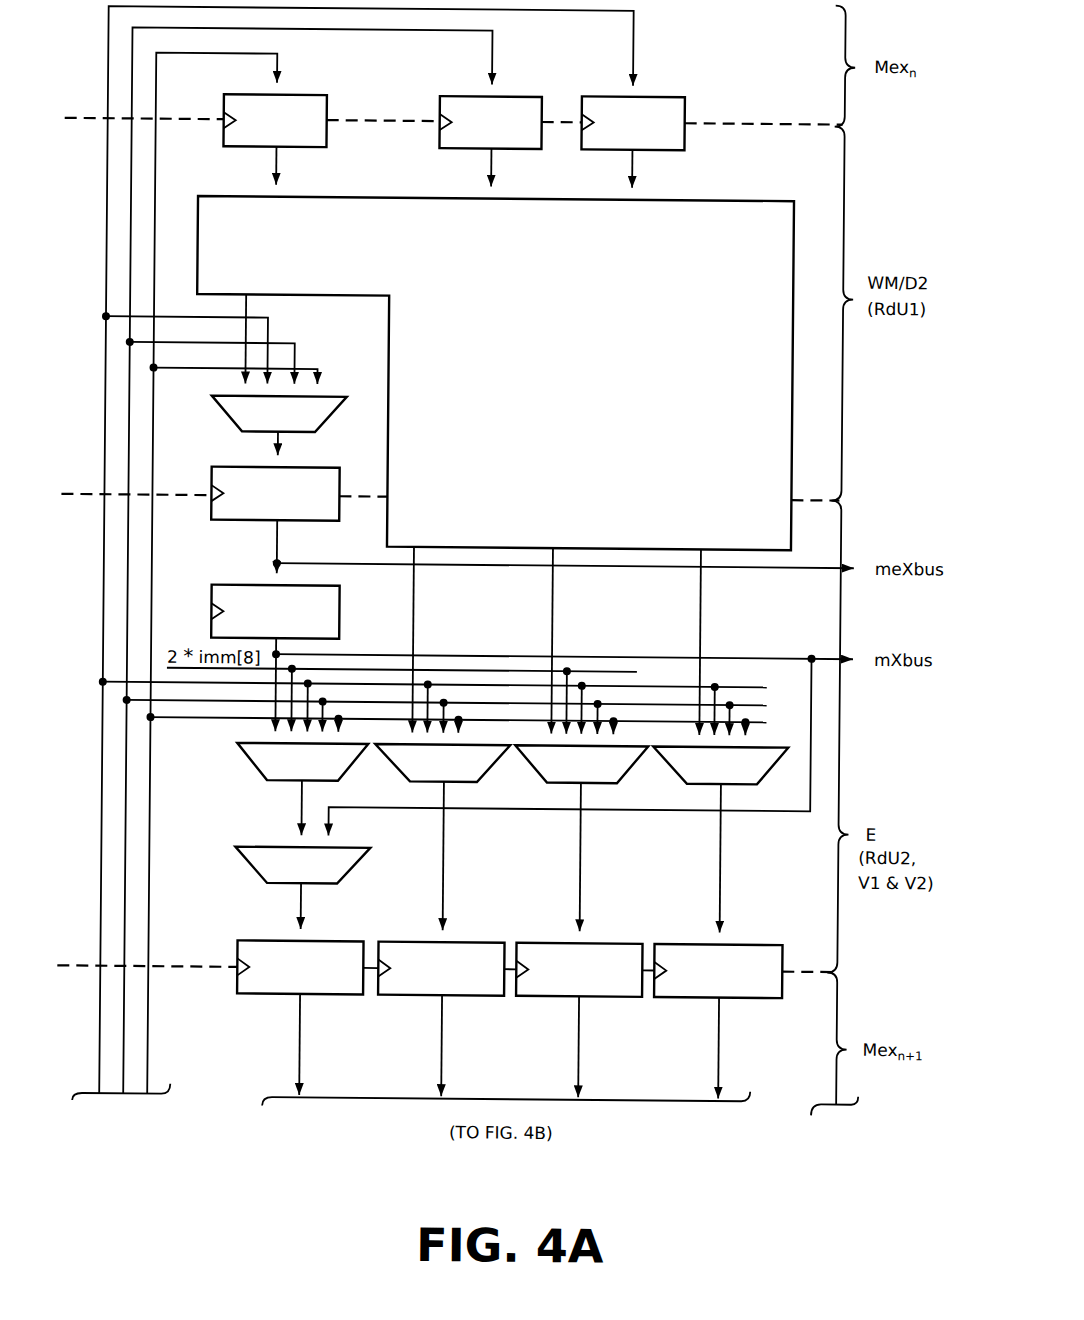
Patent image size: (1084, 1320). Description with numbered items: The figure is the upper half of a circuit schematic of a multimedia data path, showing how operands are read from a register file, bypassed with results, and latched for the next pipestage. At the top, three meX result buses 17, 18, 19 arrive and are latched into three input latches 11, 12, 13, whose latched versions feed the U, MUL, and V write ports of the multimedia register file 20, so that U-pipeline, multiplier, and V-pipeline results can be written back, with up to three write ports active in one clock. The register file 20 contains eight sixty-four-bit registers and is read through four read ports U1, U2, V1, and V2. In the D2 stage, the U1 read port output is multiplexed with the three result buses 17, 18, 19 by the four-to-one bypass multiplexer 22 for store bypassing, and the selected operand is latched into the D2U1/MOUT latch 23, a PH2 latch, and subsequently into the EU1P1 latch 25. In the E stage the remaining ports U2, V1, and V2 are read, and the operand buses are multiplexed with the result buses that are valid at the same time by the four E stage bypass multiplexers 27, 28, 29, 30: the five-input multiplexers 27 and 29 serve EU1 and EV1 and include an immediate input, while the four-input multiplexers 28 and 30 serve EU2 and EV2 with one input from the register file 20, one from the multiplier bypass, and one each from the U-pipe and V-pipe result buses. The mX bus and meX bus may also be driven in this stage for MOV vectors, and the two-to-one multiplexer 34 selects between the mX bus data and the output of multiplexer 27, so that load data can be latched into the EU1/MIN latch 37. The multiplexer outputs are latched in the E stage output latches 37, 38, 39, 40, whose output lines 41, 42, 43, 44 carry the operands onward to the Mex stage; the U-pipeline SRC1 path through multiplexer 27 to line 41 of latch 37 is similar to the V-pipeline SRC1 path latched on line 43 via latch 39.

The input latch 11 is at (322, 110).
The input latch 12 is at (540, 110).
The input latch 13 is at (681, 108).
The meX result bus 17 is at (103, 859).
The meX result bus 18 is at (127, 830).
The meX result bus 19 is at (150, 880).
The multimedia register file 20 is at (567, 397).
The 4:1 multiplexer 22 is at (223, 415).
The D2U1/MOUT latch 23 is at (338, 484).
The EU1P1 latch 25 is at (236, 585).
The 5:1 multiplexer 27 is at (246, 758).
The 4:1 multiplexer 28 is at (496, 770).
The 5:1 multiplexer 29 is at (640, 768).
The 4:1 multiplexer 30 is at (770, 772).
The 2:1 multiplexer 34 is at (354, 871).
The EU1/MIN latch 37 is at (260, 942).
The E stage output latch 38 is at (476, 946).
The E stage output latch 39 is at (617, 946).
The E stage output latch 40 is at (748, 946).
The output line 41 is at (302, 1049).
The output line 42 is at (441, 1049).
The output line 43 is at (579, 1048).
The output line 44 is at (719, 1047).